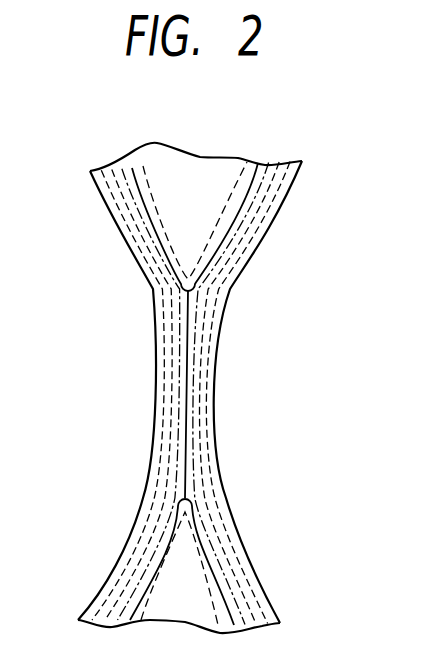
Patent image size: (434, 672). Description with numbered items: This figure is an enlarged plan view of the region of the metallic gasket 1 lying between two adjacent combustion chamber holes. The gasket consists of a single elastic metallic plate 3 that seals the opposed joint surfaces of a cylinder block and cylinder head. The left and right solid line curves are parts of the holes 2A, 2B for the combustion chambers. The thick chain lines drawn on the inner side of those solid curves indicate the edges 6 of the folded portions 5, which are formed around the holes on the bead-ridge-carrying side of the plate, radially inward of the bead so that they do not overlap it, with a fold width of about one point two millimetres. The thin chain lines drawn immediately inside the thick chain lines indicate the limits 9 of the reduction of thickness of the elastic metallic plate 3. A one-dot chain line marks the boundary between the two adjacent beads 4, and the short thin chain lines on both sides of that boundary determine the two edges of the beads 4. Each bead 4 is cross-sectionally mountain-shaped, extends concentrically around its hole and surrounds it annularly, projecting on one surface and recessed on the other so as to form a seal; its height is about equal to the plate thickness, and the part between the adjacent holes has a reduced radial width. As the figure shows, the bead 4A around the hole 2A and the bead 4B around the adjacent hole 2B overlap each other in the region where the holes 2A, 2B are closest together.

The metallic gasket 1 is at (294, 144).
The hole for combustion chamber 2A is at (158, 374).
The hole for combustion chamber 2B is at (212, 402).
The elastic metallic plate 3 is at (167, 150).
The bead 4 is at (188, 363).
The bead around hole 2A 4A is at (116, 163).
The bead around hole 2B 4B is at (252, 166).
The folded portion 5 is at (148, 293).
The edge of folded portion 6 is at (142, 245).
The limit of reduction of thickness 9 is at (165, 445).